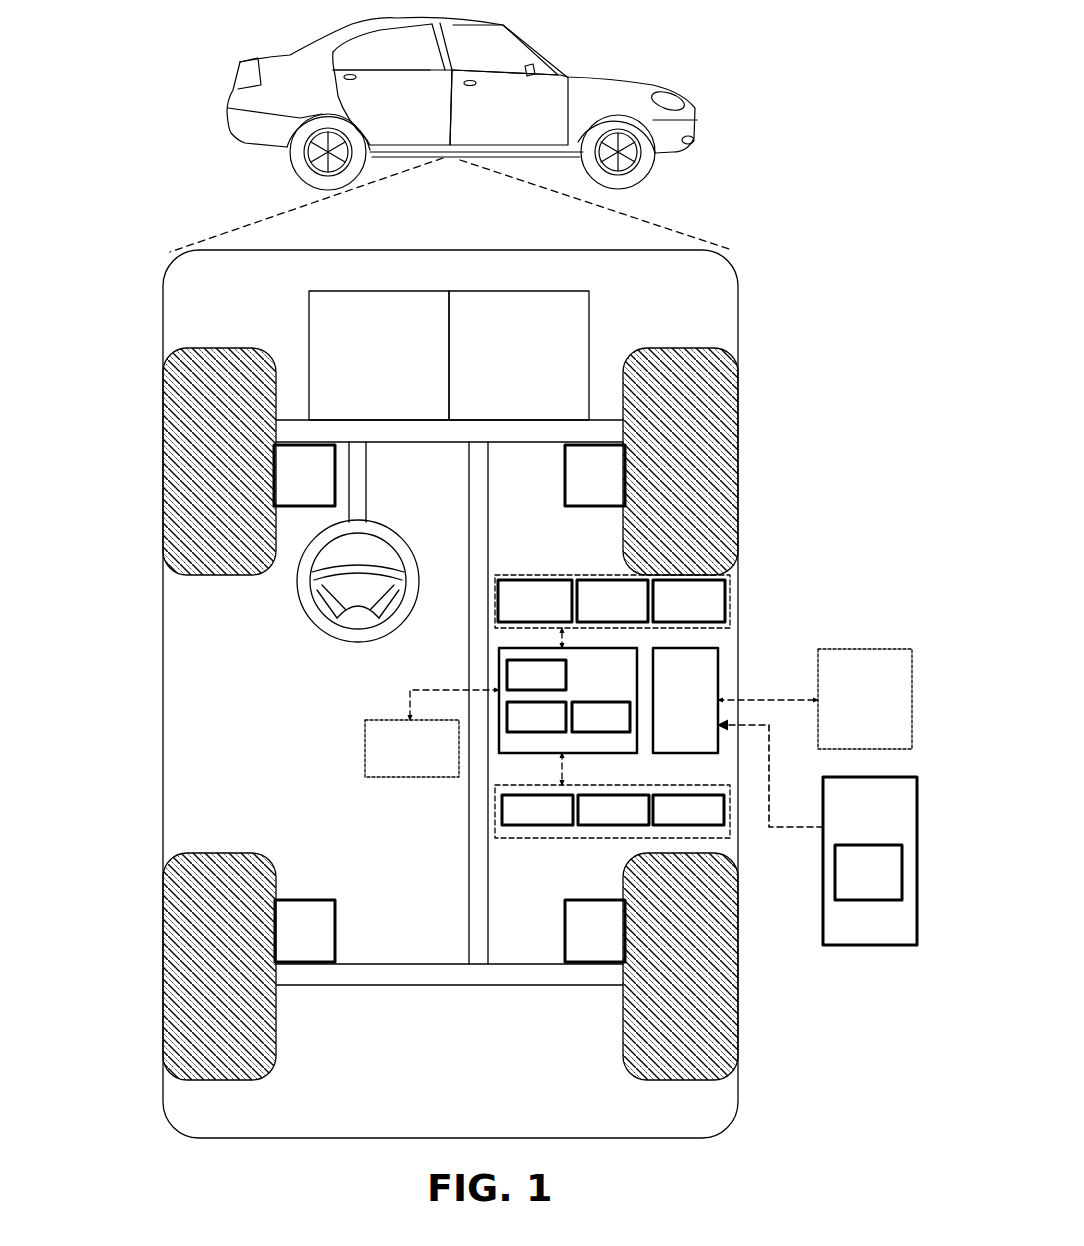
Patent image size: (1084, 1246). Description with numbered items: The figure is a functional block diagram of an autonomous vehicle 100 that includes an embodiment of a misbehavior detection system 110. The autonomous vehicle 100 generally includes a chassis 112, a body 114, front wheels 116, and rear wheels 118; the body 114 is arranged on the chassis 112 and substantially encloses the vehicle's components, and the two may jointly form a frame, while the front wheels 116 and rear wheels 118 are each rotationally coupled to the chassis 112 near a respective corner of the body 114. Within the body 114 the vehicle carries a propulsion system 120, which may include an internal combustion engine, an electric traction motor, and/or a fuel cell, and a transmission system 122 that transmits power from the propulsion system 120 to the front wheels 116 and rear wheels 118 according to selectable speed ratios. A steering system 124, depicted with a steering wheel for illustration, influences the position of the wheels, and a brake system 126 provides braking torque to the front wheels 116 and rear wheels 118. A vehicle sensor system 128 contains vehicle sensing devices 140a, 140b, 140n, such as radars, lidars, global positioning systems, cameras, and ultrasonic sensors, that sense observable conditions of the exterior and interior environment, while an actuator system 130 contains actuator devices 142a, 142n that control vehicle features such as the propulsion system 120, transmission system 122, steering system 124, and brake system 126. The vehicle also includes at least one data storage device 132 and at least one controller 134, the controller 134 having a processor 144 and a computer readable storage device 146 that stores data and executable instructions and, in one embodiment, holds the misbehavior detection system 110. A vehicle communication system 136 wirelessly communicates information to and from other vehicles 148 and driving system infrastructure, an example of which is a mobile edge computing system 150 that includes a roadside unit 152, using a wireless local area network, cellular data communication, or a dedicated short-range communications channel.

The autonomous vehicle 100 is at (233, 89).
The misbehavior detection system 110 is at (536, 675).
The chassis 112 is at (467, 828).
The body 114 is at (160, 662).
The front wheels 116 is at (222, 347).
The rear wheels 118 is at (218, 1084).
The propulsion system 120 is at (379, 355).
The transmission system 122 is at (519, 355).
The steering system 124 is at (375, 503).
The brake system 126 is at (449, 703).
The vehicle sensor system 128 is at (578, 573).
The actuator system 130 is at (580, 839).
The data storage device 132 is at (412, 748).
The controller 134 is at (568, 700).
The vehicle communication system 136 is at (685, 700).
The vehicle sensing device 140a is at (535, 601).
The vehicle sensing device 140b is at (612, 601).
The vehicle sensing device 140n is at (689, 601).
The actuator device 142a is at (575, 810).
The actuator device 142n is at (688, 810).
The processor 144 is at (536, 717).
The computer readable storage device 146 is at (601, 717).
The other vehicles 148 is at (865, 699).
The mobile edge computing (MEC) system 150 is at (870, 861).
The roadside unit (RSU) 152 is at (868, 872).